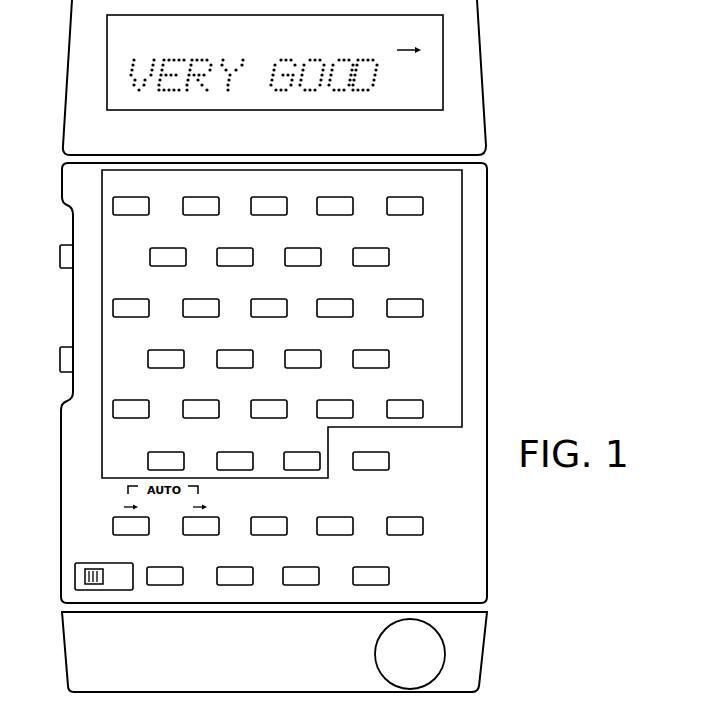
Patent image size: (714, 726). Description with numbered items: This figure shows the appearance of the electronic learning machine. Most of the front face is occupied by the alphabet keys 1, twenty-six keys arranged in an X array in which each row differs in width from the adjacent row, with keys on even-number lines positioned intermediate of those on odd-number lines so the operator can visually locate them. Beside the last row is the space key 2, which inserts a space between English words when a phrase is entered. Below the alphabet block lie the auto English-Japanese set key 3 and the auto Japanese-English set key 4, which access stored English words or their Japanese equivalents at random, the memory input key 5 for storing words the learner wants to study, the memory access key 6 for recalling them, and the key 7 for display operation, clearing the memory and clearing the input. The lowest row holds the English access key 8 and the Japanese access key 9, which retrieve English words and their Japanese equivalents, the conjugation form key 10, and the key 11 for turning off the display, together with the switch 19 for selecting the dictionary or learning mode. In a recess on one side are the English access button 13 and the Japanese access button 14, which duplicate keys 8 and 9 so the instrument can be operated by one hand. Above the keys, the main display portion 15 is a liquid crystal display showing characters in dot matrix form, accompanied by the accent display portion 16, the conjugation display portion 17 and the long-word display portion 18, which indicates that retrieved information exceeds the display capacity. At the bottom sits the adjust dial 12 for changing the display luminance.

The alphabet keys 1 is at (452, 277).
The space key 2 is at (389, 459).
The auto English-Japanese set key 3 is at (113, 527).
The auto Japanese-English set key 4 is at (210, 525).
The memory input key 5 is at (280, 524).
The memory access key 6 is at (349, 524).
The instruction key 7 is at (423, 527).
The English access key 8 is at (156, 584).
The Japanese access key 9 is at (221, 580).
The conjugation form key 10 is at (289, 581).
The display off key 11 is at (389, 577).
The adjust dial 12 is at (380, 660).
The English access button 13 is at (60, 256).
The Japanese access button 14 is at (60, 355).
The main display portion 15 is at (133, 70).
The accent display portion 16 is at (190, 47).
The conjugation display portion 17 is at (373, 49).
The long-word display portion 18 is at (405, 53).
The dictionary/learning mode selecting switch 19 is at (75, 577).